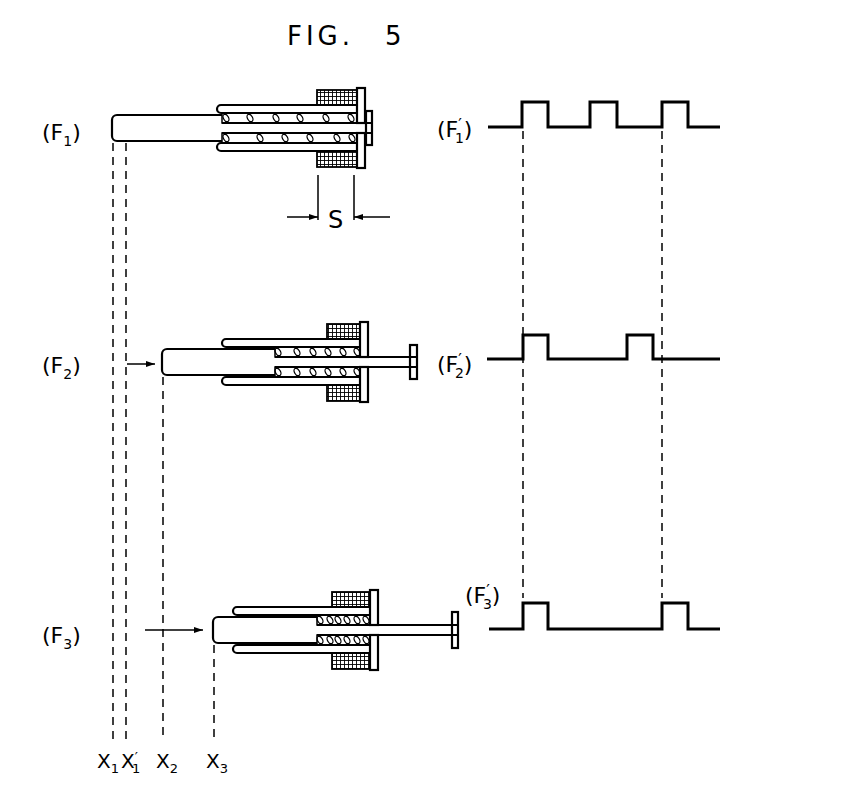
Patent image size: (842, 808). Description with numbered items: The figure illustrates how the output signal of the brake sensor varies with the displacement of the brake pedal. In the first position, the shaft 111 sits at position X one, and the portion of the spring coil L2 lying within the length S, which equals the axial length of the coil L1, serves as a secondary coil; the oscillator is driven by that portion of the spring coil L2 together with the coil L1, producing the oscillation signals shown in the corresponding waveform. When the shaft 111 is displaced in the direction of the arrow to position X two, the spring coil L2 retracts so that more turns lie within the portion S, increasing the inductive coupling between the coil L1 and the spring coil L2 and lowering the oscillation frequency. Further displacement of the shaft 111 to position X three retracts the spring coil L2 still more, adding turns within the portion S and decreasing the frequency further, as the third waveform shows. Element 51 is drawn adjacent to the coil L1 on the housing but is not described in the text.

The shaft 111 is at (160, 117).
The housing 51 is at (318, 97).
The coil L1 is at (337, 93).
The spring coil L2 is at (258, 141).